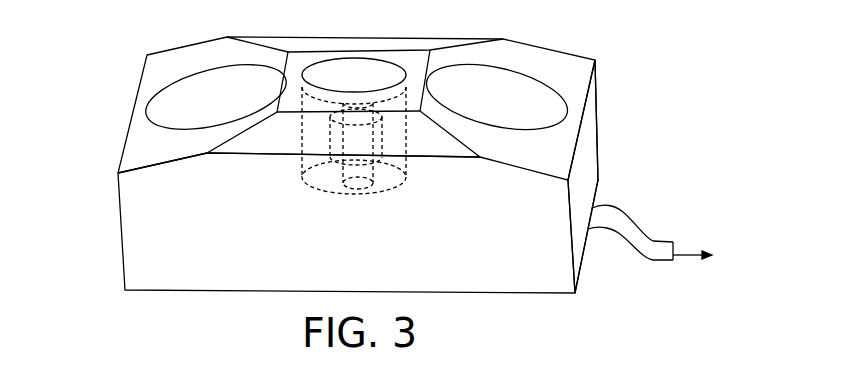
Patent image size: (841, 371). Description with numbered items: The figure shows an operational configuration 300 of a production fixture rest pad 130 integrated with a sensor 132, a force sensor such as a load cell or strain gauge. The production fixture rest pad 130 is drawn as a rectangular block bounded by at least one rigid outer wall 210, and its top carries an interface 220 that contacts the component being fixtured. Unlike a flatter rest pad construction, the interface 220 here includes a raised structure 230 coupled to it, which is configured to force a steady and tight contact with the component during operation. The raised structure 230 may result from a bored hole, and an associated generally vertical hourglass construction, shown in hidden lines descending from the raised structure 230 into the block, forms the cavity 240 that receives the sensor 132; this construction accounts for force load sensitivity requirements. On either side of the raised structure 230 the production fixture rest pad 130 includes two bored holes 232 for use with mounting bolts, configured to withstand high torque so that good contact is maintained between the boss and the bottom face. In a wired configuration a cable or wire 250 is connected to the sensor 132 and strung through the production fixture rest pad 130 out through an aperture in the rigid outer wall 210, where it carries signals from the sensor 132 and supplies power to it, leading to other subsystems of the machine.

The production fixture rest pad 130 is at (548, 49).
The sensor 132 is at (335, 162).
The rigid outer wall 210 is at (587, 158).
The interface 220 is at (413, 62).
The raised structure 230 is at (347, 70).
The bored holes 232 is at (146, 107).
The cavity 240 is at (335, 190).
The cable or wire 250 is at (637, 215).
The operational configuration 300 is at (703, 71).